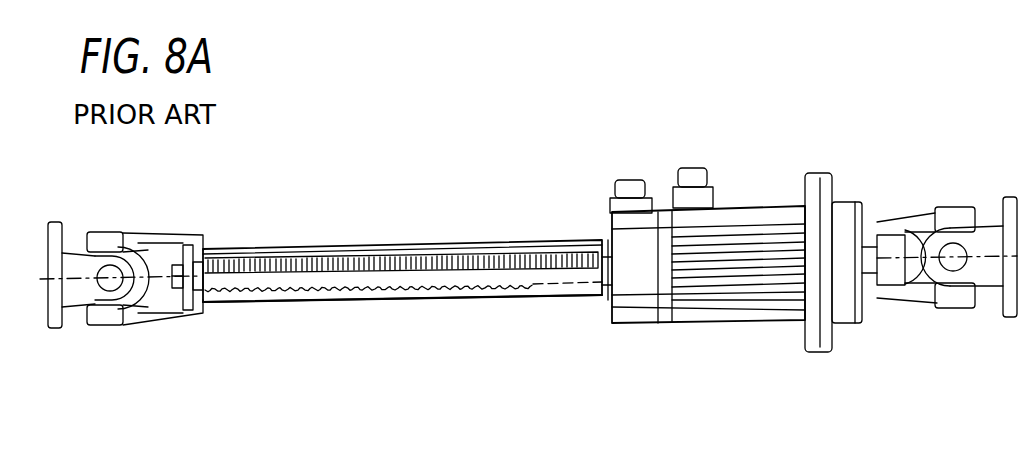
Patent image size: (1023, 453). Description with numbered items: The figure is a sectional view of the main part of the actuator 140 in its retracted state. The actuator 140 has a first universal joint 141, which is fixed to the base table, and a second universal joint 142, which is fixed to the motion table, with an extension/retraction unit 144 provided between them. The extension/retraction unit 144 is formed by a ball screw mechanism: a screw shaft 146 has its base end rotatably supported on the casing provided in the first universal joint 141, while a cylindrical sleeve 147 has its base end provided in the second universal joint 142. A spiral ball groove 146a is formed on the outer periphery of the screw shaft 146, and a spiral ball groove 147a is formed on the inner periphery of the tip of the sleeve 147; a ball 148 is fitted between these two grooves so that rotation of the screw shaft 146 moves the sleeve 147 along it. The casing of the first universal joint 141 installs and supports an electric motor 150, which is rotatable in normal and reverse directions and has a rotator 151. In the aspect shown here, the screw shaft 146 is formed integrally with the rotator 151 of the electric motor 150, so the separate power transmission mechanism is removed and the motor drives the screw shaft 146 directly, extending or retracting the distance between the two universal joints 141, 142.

The actuator 140 is at (572, 160).
The first universal joint 141 is at (990, 228).
The second universal joint 142 is at (73, 245).
The extension/retraction unit 144 is at (546, 297).
The screw shaft 146 is at (448, 256).
The spiral ball groove 146a is at (458, 300).
The cylindrical sleeve 147 is at (336, 247).
The spiral ball groove 147a is at (540, 243).
The ball 148 is at (548, 250).
The electric motor 150 is at (757, 207).
The rotator 151 is at (607, 297).